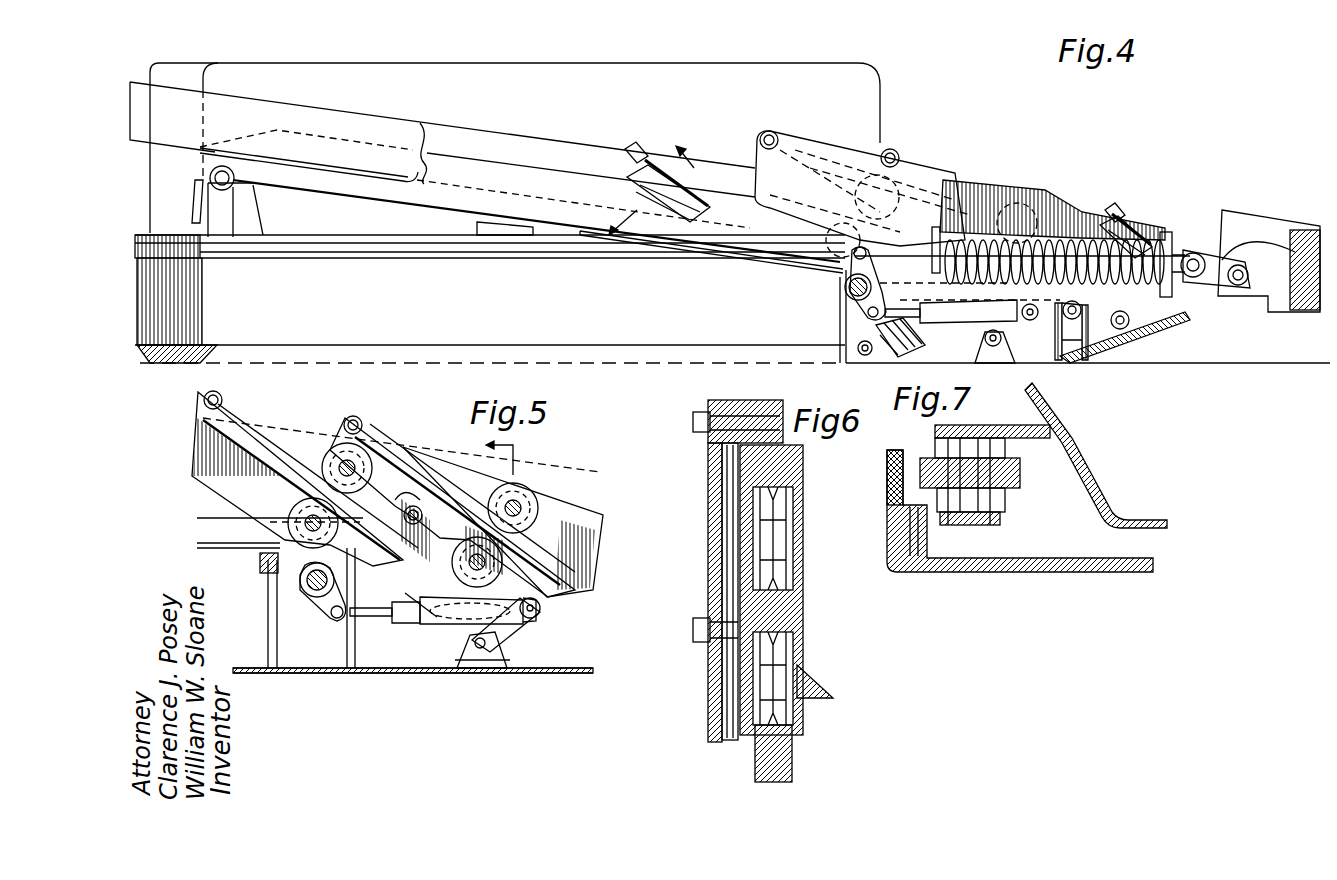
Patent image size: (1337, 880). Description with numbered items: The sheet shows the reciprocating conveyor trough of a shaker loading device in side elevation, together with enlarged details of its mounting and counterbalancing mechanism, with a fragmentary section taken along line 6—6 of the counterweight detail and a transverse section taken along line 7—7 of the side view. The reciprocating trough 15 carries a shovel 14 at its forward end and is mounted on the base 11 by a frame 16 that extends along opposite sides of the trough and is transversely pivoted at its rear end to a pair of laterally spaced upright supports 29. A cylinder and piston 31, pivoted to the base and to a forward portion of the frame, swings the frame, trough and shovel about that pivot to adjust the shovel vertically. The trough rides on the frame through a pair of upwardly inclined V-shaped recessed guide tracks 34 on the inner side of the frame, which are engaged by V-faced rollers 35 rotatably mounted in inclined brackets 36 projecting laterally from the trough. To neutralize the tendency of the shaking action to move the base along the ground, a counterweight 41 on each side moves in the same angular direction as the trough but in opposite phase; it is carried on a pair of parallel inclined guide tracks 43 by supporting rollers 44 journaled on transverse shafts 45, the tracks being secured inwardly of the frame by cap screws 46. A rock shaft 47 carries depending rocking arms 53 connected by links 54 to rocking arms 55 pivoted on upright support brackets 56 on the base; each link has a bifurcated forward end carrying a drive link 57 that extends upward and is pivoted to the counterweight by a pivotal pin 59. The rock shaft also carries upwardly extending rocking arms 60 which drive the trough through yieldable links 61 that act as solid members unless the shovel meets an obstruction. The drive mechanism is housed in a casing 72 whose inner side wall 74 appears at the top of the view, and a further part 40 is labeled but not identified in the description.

In FIG. 5, the section line 6— 6 is at (451, 525).
In FIG. 4, the section line 7— 7 is at (643, 184).
In FIG. 4, the base 11 is at (1113, 364).
In FIG. 4, the shovel 14 is at (1292, 314).
In FIG. 4, the reciprocating trough 15 is at (1170, 232).
In FIG. 7, the reciprocating trough 15 is at (1052, 409).
In FIG. 4, the frame 16 is at (460, 200).
In FIG. 6, the frame 16 is at (708, 706).
In FIG. 7, the frame 16 is at (1020, 573).
In FIG. 4, the upright supports 29 is at (232, 213).
In FIG. 4, the cylinder and piston 31 is at (887, 364).
In FIG. 7, the V-shaped recessed guide tracks 34 is at (912, 448).
In FIG. 4, the rollers 35 is at (664, 153).
In FIG. 7, the rollers 35 is at (1020, 480).
In FIG. 4, the inclined brackets 36 is at (642, 145).
In FIG. 7, the inclined brackets 36 is at (1015, 425).
In FIG. 4, the pivot bolt 40 is at (901, 153).
In FIG. 5, the counterweight 41 is at (580, 497).
In FIG. 6, the counterweight 41 is at (815, 712).
In FIG. 5, the inclined guide tracks 43 is at (245, 425).
In FIG. 6, the inclined guide tracks 43 is at (792, 748).
In FIG. 5, the supporting rollers 44 is at (327, 442).
In FIG. 6, the supporting rollers 44 is at (806, 598).
In FIG. 5, the transverse shafts 45 is at (350, 455).
In FIG. 6, the transverse shafts 45 is at (803, 536).
In FIG. 4, the cap screws 46 is at (773, 133).
In FIG. 5, the cap screws 46 is at (237, 392).
In FIG. 6, the cap screws 46 is at (693, 424).
In FIG. 4, the rock shaft 47 is at (845, 292).
In FIG. 5, the rock shaft 47 is at (309, 600).
In FIG. 4, the depending rocking arms 53 is at (858, 300).
In FIG. 5, the depending rocking arms 53 is at (337, 618).
In FIG. 4, the links 54 is at (945, 323).
In FIG. 5, the links 54 is at (402, 625).
In FIG. 4, the rocking arms 55 is at (1062, 345).
In FIG. 5, the rocking arms 55 is at (540, 623).
In FIG. 4, the upright support brackets 56 is at (900, 354).
In FIG. 5, the upright support brackets 56 is at (460, 665).
In FIG. 4, the drive link 57 is at (1022, 316).
In FIG. 5, the drive link 57 is at (548, 601).
In FIG. 5, the pivotal pins 59 is at (440, 474).
In FIG. 4, the upwardly extending rocking arms 60 is at (832, 268).
In FIG. 4, the yieldable links 61 is at (962, 235).
In FIG. 4, the casing 72 is at (881, 80).
In FIG. 4, the inner side wall 74 is at (710, 82).